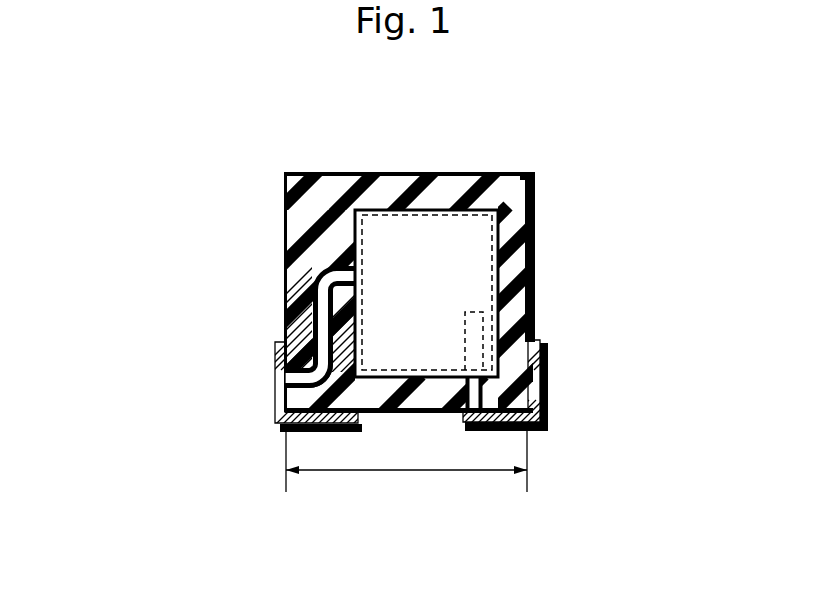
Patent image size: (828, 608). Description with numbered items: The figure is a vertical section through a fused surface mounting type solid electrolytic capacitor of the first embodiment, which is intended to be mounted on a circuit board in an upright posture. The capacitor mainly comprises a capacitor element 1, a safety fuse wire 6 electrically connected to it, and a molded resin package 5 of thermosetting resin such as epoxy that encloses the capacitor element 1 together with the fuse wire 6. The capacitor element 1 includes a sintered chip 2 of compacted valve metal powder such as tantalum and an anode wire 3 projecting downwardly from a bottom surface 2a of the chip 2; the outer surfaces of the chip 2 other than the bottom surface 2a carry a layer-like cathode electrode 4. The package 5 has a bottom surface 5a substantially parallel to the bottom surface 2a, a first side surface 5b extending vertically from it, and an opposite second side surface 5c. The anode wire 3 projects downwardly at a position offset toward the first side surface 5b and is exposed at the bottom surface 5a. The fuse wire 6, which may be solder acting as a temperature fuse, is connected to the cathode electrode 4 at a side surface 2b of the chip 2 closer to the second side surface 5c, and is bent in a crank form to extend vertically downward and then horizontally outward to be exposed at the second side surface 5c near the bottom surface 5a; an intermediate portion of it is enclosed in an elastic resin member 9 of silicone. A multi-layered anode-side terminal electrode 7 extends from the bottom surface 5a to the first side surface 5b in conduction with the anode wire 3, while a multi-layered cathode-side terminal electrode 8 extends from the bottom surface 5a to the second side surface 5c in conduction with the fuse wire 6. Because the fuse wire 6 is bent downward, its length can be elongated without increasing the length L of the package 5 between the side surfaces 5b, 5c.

The capacitor element 1 is at (504, 254).
The sintered chip 2 is at (439, 235).
The bottom surface of chip 2a is at (376, 415).
The side surface of chip 2b is at (350, 229).
The anode wire 3 is at (456, 420).
The cathode electrode 4 is at (529, 177).
The molded resin package 5 is at (309, 169).
The bottom surface of package 5a is at (408, 415).
The first side surface of package 5b is at (535, 299).
The second side surface of package 5c is at (283, 297).
The safety fuse wire 6 is at (282, 432).
The anode-side terminal electrode 7 is at (520, 431).
The cathode-side terminal electrode 8 is at (276, 413).
The elastic resin member 9 is at (300, 357).
The length of package L is at (460, 474).